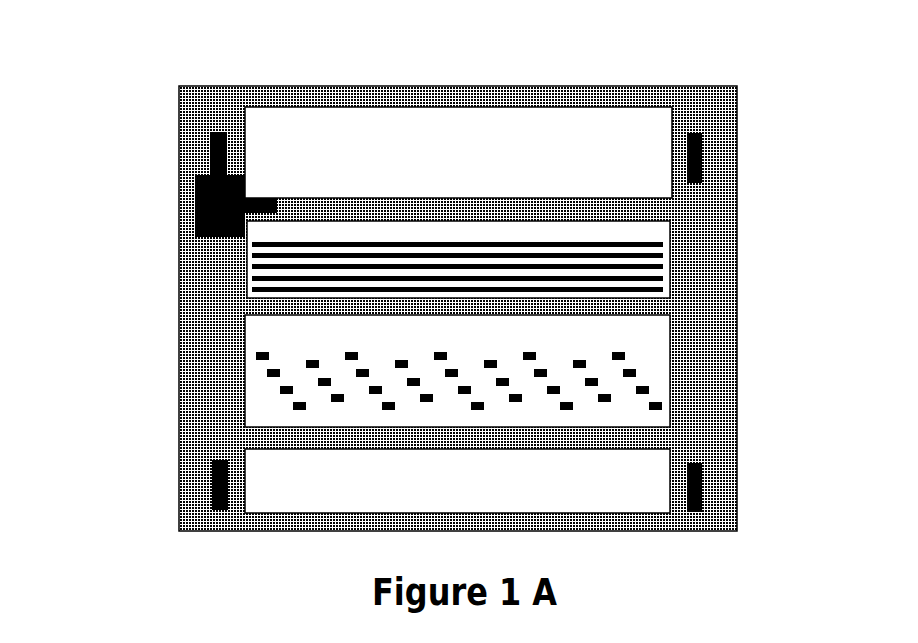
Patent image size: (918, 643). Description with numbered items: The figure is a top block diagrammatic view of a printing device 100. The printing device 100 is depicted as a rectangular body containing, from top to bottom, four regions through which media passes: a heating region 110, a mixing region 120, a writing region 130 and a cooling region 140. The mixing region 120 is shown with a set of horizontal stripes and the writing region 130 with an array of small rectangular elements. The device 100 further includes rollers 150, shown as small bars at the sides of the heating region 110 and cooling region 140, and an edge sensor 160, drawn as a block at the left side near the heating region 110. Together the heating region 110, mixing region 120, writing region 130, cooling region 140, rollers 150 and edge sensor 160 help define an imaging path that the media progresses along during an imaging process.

The printing device 100 is at (87, 44).
The heating region 110 is at (667, 118).
The mixing region 120 is at (665, 260).
The writing region 130 is at (662, 379).
The cooling region 140 is at (267, 462).
The rollers 150 is at (212, 134).
The edge sensor 160 is at (196, 187).